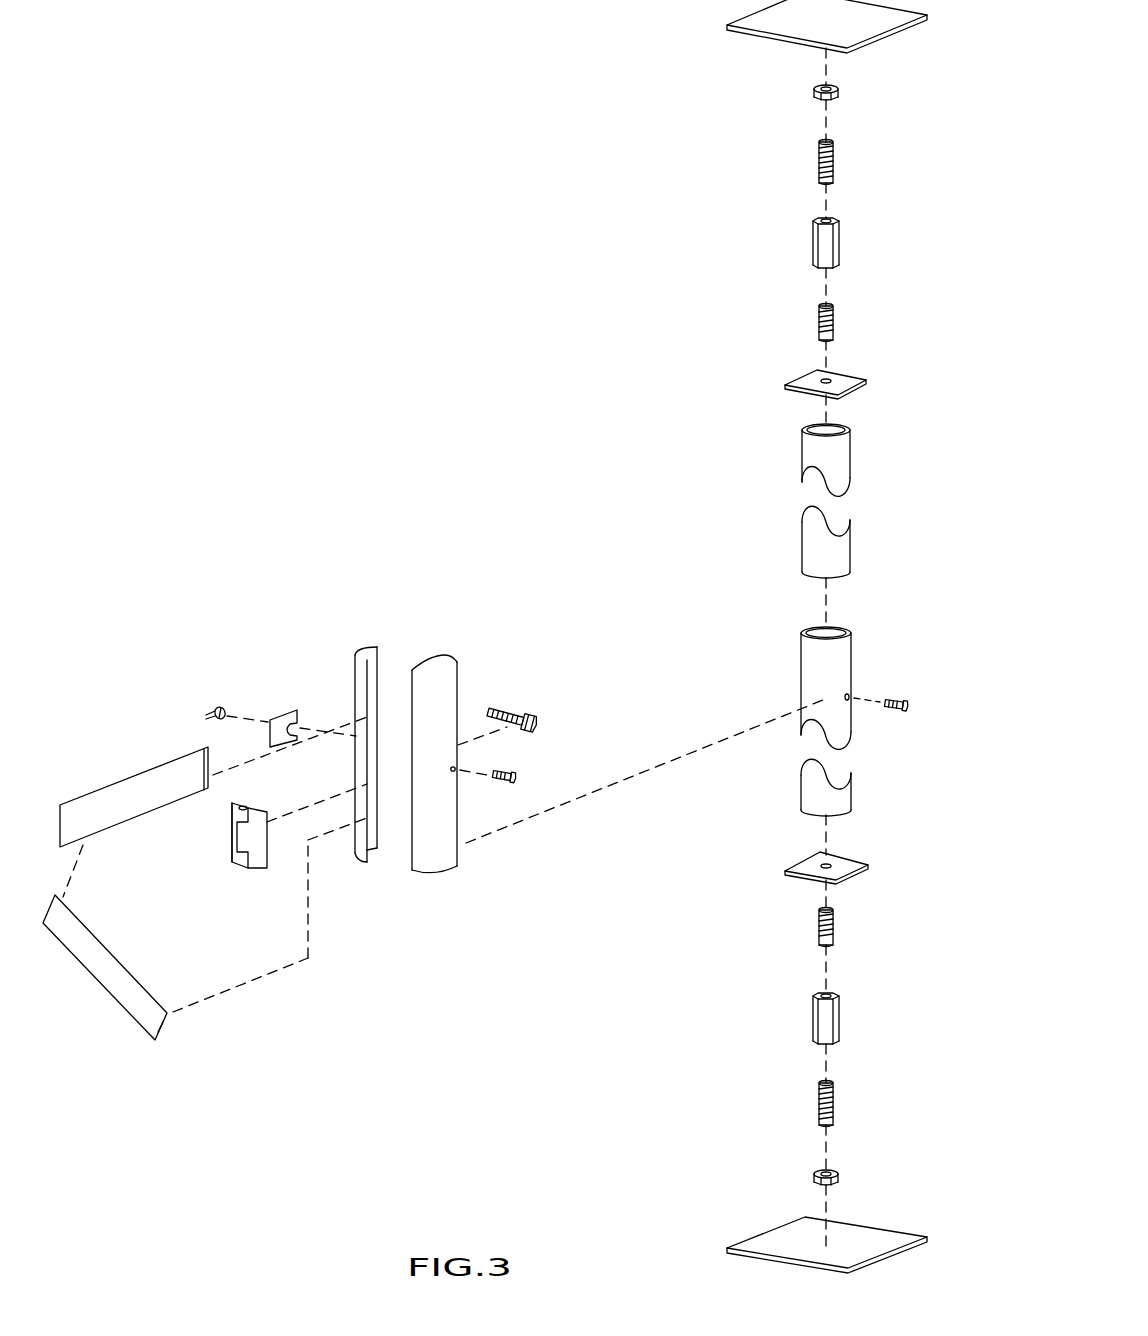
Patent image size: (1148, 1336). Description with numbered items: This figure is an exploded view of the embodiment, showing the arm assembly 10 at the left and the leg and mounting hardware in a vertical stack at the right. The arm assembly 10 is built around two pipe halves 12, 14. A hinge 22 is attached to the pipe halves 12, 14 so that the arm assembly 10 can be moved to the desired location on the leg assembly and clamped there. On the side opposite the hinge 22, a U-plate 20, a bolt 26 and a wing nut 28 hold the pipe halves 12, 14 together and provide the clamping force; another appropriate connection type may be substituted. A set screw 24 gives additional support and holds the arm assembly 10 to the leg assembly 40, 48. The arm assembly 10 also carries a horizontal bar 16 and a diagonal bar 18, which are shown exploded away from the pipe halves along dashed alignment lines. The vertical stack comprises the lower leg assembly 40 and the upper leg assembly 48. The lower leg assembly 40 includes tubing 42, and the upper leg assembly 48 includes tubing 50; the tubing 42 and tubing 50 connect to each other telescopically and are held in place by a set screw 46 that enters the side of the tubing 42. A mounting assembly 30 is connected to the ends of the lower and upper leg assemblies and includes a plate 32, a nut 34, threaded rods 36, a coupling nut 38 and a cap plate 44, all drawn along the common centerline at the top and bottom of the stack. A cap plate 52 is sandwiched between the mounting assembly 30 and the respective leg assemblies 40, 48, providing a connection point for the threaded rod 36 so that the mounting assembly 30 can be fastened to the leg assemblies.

The arm assembly 10 is at (193, 590).
The pipe half 12 is at (356, 674).
The pipe half 14 is at (438, 852).
The horizontal bar 16 is at (138, 788).
The diagonal bar 18 is at (113, 970).
The U-plate 20 is at (280, 720).
The hinge 22 is at (243, 860).
The set screw 24 is at (516, 783).
The bolt 26 is at (505, 712).
The wing nut 28 is at (207, 712).
The mounting assembly 30 is at (604, 151).
The plate 32 is at (783, 28).
The nut 34 is at (838, 95).
The threaded rod 36 is at (834, 165).
The coupling nut 38 is at (828, 243).
The lower leg assembly 40 is at (842, 754).
The tubing 42 is at (815, 680).
The cap plate 44 is at (812, 862).
The set screw 46 is at (898, 712).
The upper leg assembly 48 is at (828, 474).
The tubing 50 is at (815, 447).
The cap plate 52 is at (840, 385).